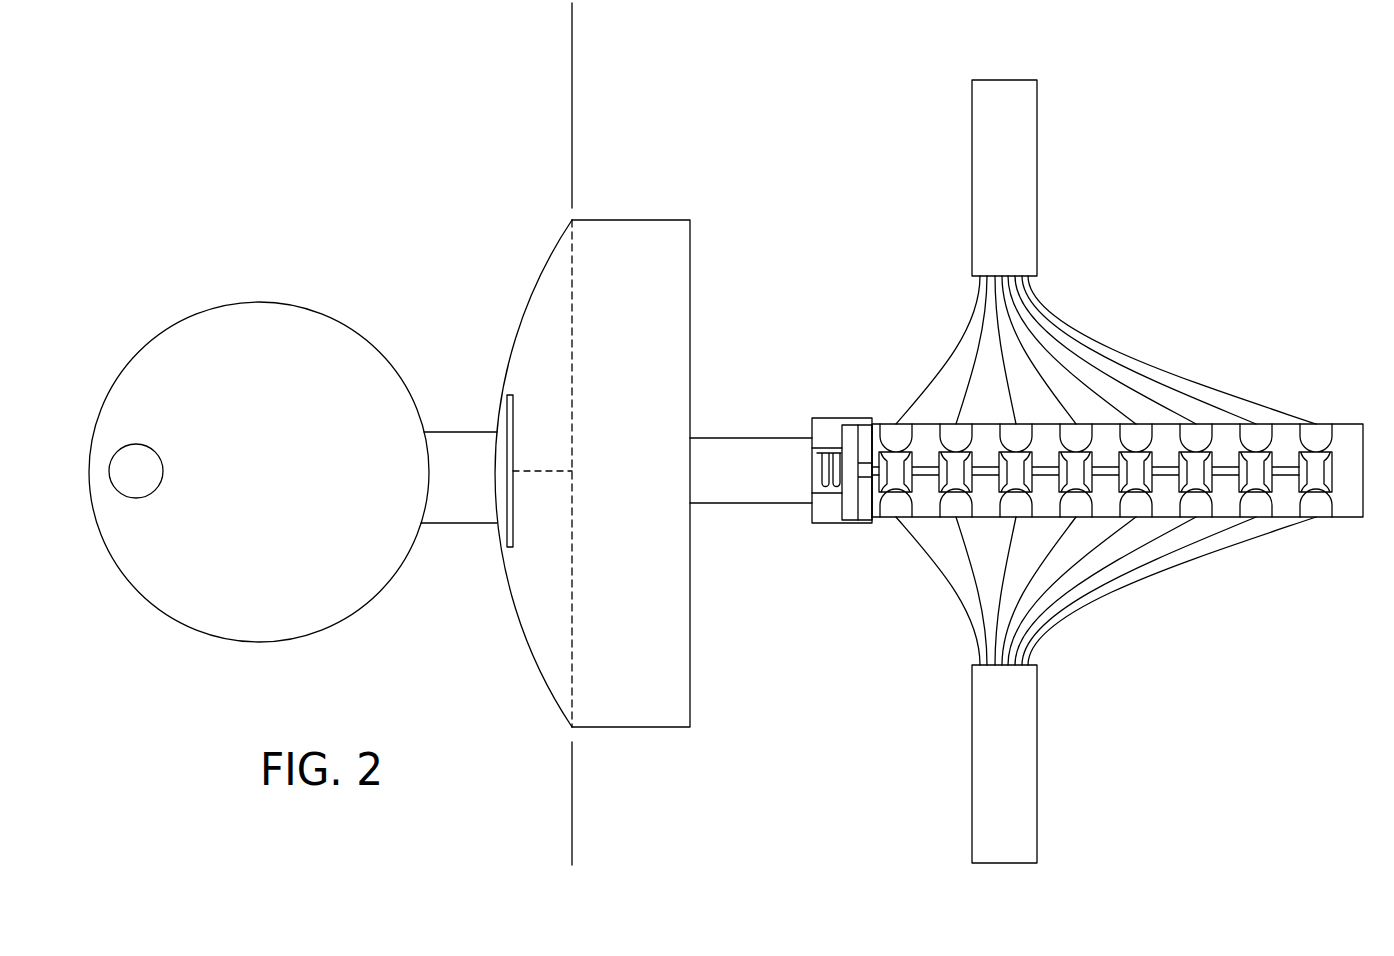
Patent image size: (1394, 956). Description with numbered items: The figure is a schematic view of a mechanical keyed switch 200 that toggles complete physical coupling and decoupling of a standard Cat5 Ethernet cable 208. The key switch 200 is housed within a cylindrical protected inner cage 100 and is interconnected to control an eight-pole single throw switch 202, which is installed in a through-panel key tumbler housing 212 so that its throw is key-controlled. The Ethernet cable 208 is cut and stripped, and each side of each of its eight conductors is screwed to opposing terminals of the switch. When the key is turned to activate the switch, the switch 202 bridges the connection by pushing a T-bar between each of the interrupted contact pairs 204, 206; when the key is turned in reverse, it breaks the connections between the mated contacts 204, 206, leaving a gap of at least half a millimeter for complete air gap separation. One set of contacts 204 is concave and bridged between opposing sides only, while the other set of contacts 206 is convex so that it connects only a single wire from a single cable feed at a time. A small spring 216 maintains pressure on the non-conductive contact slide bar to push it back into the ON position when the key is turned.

The cylindrical protected inner cage 100 is at (572, 93).
The mechanical keyed switch 200 is at (1228, 116).
The eight-pole single throw switch 202 is at (847, 525).
The concave contacts 204 is at (884, 523).
The convex contacts 206 is at (897, 415).
The Cat5 Ethernet cable 208 is at (1001, 87).
The through-panel key tumbler housing 212 is at (647, 484).
The small spring 216 is at (1355, 437).